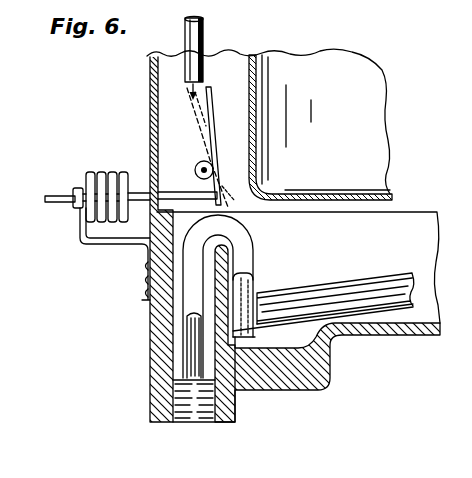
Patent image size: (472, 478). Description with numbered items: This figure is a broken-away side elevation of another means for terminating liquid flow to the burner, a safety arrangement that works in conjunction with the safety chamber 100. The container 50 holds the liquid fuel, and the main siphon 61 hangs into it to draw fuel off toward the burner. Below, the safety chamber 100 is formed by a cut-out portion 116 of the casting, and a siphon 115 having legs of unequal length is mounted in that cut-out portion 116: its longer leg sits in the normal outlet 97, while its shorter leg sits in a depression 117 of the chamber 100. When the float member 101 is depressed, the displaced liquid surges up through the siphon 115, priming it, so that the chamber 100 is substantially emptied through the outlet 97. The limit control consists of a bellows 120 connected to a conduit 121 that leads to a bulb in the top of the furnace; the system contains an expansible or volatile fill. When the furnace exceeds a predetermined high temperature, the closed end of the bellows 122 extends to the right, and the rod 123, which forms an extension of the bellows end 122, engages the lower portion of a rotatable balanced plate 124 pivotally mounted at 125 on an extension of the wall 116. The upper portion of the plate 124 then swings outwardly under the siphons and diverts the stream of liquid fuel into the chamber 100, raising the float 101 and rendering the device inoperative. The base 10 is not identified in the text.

The base block 10 is at (296, 372).
The container 50 is at (363, 88).
The main siphon 61 is at (198, 34).
The outlet 97 is at (209, 408).
The safety chamber 100 is at (400, 222).
The float member 101 is at (369, 288).
The siphon 115 is at (240, 240).
The cut-out portion 116 is at (223, 262).
The depression 117 is at (278, 344).
The bellows 120 is at (101, 172).
The conduit 121 is at (60, 195).
The closed end of the bellows 122 is at (134, 175).
The rod 123 is at (174, 192).
The rotatable balanced plate 124 is at (212, 100).
The pivot 125 is at (201, 162).